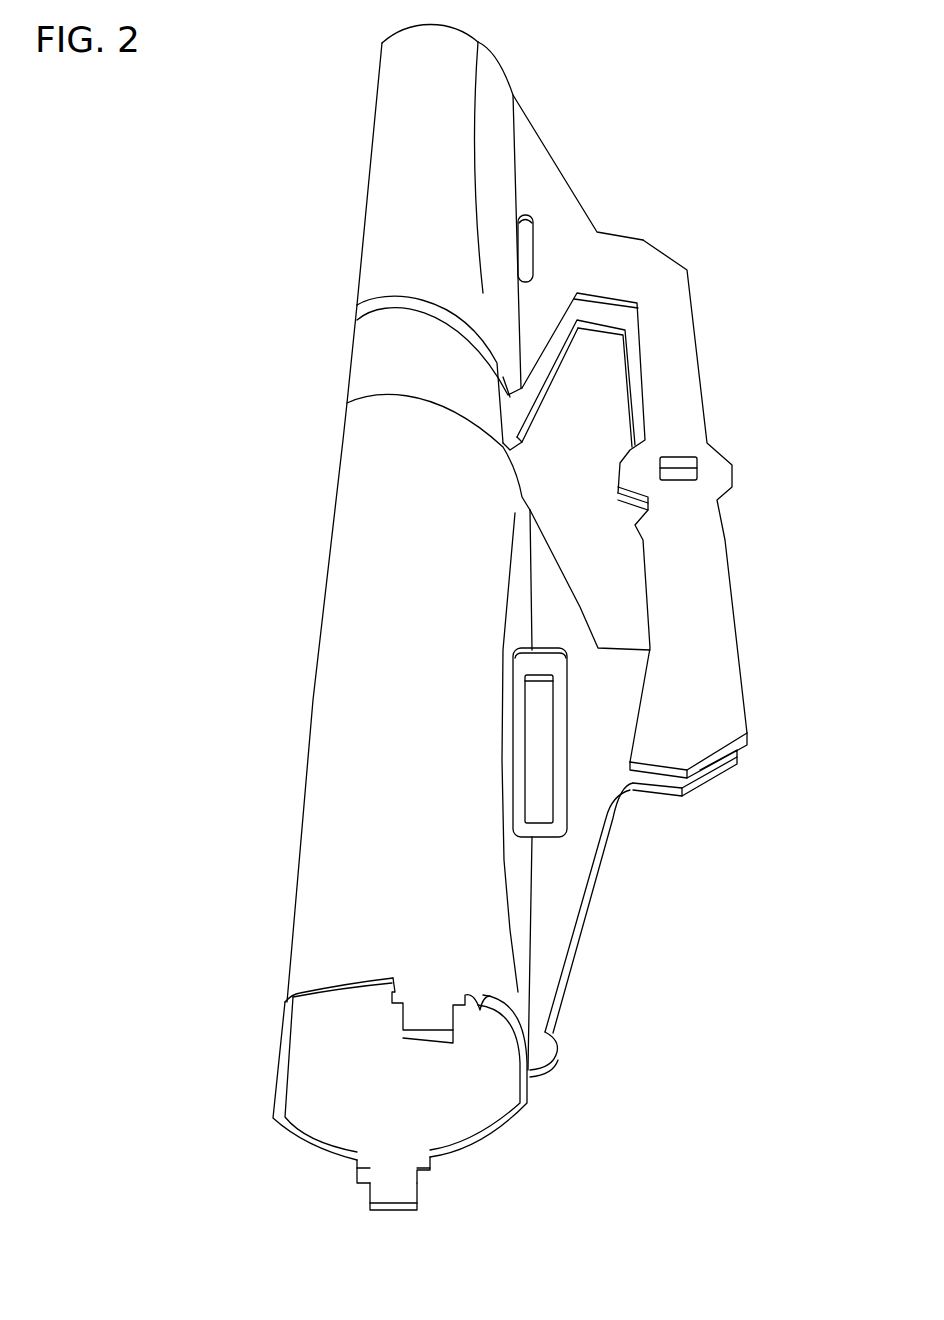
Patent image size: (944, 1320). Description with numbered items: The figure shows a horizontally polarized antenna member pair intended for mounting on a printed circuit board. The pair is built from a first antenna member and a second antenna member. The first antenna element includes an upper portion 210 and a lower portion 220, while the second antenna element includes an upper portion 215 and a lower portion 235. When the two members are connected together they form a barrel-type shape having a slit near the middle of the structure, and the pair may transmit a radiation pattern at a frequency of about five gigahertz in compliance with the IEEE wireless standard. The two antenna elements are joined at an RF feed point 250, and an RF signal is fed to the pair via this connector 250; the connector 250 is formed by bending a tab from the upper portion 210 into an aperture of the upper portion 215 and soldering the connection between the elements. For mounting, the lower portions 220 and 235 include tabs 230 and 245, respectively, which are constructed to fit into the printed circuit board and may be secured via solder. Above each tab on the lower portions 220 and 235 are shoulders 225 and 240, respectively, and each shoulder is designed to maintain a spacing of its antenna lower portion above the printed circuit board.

The upper portion 210 is at (397, 207).
The upper portion 215 is at (357, 363).
The lower portion 220 is at (337, 755).
The shoulder 225 is at (393, 980).
The tab 230 is at (413, 1022).
The lower portion 235 is at (303, 1058).
The shoulder 240 is at (360, 1160).
The tab 245 is at (380, 1190).
The RF feed point 250 is at (698, 717).